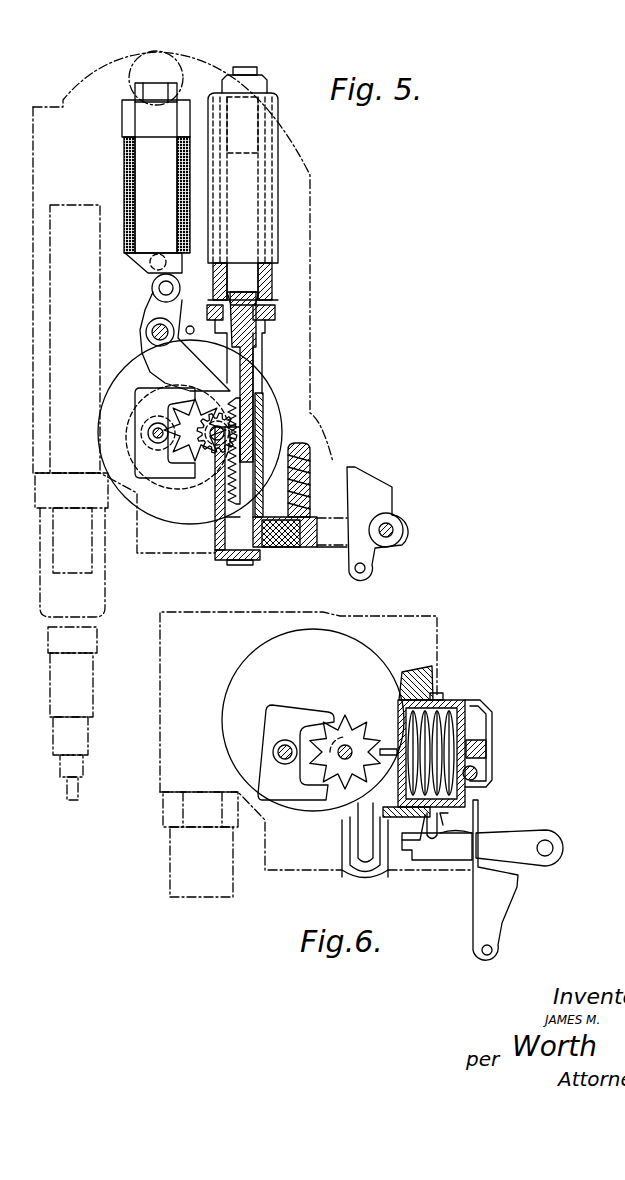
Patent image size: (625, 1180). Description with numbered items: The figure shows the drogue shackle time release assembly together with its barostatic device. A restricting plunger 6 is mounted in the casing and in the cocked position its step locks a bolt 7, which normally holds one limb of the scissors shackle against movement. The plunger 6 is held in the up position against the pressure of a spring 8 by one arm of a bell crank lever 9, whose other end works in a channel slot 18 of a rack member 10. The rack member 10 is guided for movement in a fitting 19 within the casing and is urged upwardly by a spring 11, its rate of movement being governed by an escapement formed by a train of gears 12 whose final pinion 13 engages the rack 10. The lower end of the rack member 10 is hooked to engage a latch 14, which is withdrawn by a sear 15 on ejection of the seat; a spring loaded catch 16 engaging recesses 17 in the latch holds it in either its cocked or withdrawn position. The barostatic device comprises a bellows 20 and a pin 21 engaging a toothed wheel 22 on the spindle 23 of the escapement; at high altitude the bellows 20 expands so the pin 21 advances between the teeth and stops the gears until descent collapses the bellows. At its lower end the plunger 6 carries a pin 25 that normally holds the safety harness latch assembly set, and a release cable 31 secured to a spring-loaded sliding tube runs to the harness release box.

In FIG. 5, the restricting plunger 6 is at (158, 156).
In FIG. 5, the bolt 7 is at (150, 62).
In FIG. 5, the spring 8 is at (125, 160).
In FIG. 5, the bell crank lever 9 is at (148, 311).
In FIG. 5, the rack member 10 is at (250, 367).
In FIG. 6, the rack member 10 is at (345, 828).
In FIG. 5, the spring 11 is at (260, 272).
In FIG. 5, the train of gears 12 is at (115, 433).
In FIG. 5, the final pinion 13 is at (215, 452).
In FIG. 5, the latch 14 is at (272, 548).
In FIG. 6, the latch 14 is at (512, 842).
In FIG. 5, the sear 15 is at (372, 483).
In FIG. 6, the sear 15 is at (474, 893).
In FIG. 5, the spring loaded catch 16 is at (306, 515).
In FIG. 6, the spring loaded catch 16 is at (445, 813).
In FIG. 5, the recesses 17 is at (298, 532).
In FIG. 5, the channel slot 18 is at (234, 353).
In FIG. 5, the fitting 19 is at (262, 324).
In FIG. 6, the bellows 20 is at (437, 702).
In FIG. 6, the pin 21 is at (362, 700).
In FIG. 5, the toothed wheel 22 is at (193, 458).
In FIG. 6, the toothed wheel 22 is at (350, 722).
In FIG. 5, the spindle 23 is at (238, 428).
In FIG. 5, the pin 25 is at (150, 268).
In FIG. 5, the release cable 31 is at (80, 792).